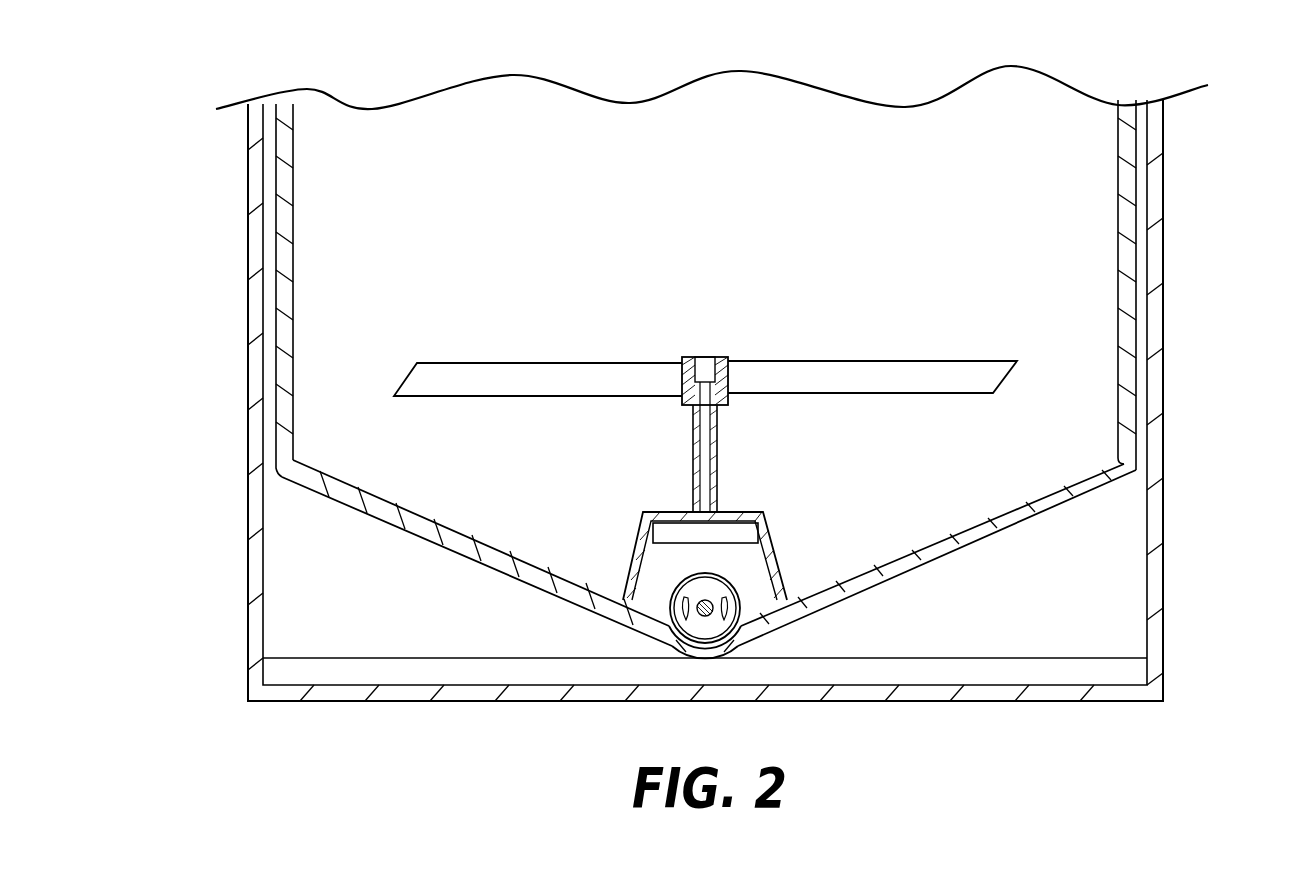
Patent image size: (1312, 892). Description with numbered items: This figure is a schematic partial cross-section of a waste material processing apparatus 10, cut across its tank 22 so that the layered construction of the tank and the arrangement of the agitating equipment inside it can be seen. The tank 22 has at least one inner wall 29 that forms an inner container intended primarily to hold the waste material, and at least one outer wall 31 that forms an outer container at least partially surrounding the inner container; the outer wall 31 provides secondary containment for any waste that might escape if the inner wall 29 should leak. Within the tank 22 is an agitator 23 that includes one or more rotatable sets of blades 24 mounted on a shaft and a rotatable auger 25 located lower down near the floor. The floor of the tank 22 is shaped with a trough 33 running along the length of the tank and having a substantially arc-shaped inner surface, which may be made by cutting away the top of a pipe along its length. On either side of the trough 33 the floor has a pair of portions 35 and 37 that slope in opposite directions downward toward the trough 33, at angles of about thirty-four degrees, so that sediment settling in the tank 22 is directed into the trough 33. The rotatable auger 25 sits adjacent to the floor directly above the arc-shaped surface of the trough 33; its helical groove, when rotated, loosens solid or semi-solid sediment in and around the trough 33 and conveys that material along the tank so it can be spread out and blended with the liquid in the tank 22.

The waste material processing apparatus 10 is at (1168, 247).
The tank 22 is at (244, 196).
The agitator 23 is at (772, 332).
The blades 24 is at (857, 372).
The rotatable auger 25 is at (707, 605).
The inner wall 29 is at (287, 221).
The outer wall 31 is at (257, 261).
The trough 33 is at (747, 633).
The sloping portion 35 is at (445, 538).
The sloping portion 37 is at (972, 530).